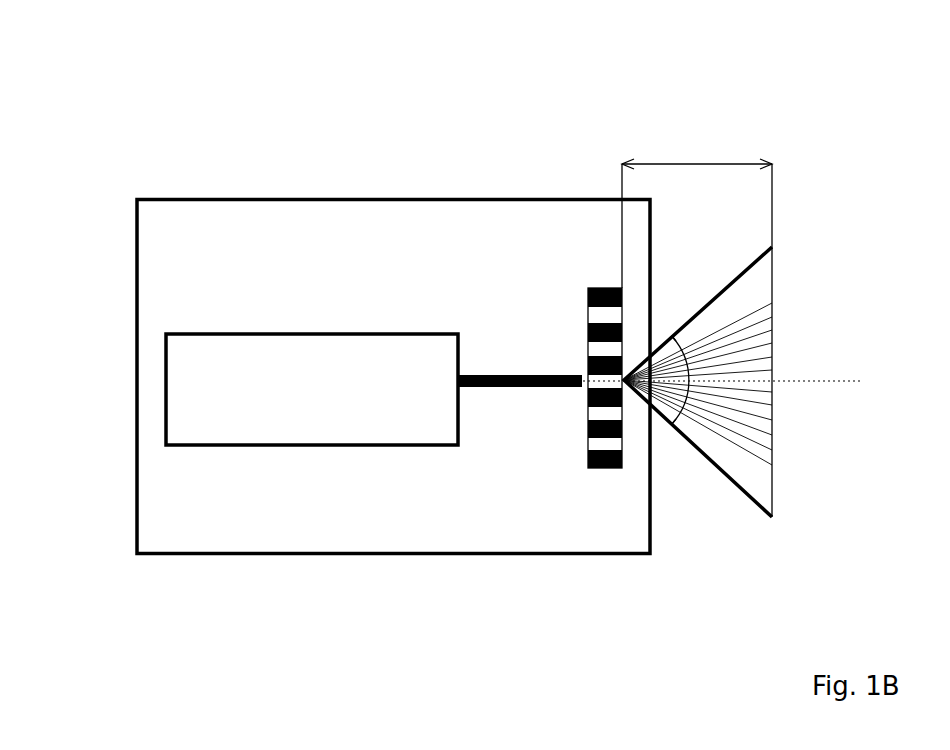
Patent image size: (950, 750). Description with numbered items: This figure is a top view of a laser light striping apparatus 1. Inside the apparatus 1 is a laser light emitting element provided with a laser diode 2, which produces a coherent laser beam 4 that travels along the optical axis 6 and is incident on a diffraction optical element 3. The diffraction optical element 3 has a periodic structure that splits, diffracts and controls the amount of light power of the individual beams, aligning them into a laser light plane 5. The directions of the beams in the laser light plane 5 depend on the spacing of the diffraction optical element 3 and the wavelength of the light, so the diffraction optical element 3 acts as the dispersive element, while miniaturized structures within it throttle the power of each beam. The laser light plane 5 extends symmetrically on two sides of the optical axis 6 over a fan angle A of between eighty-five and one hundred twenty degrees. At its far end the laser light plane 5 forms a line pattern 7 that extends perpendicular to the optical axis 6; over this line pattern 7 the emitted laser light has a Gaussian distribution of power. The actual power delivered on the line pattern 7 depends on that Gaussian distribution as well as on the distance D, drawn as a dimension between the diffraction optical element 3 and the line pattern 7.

The laser light striping apparatus 1 is at (118, 148).
The laser diode 2 is at (275, 332).
The diffraction optical element 3 is at (588, 291).
The coherent laser beam 4 is at (508, 375).
The laser light plane 5 is at (743, 450).
The optical axis 6 is at (828, 380).
The line pattern 7 is at (771, 453).
The fan angle A is at (694, 345).
The distance D is at (718, 163).